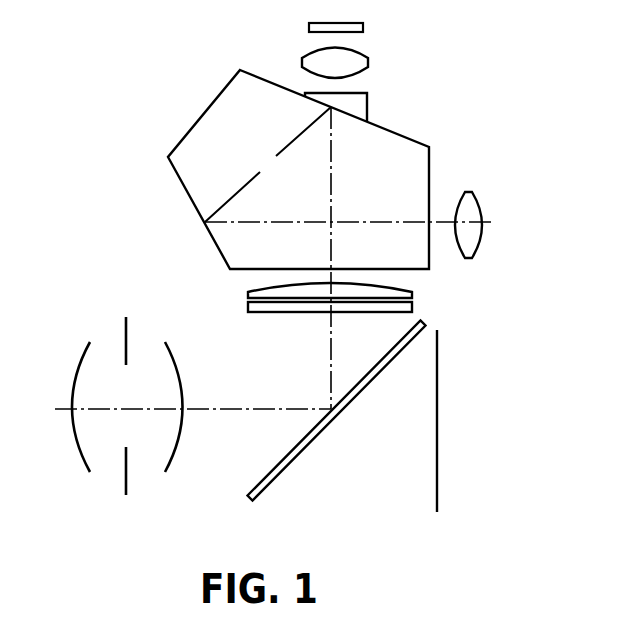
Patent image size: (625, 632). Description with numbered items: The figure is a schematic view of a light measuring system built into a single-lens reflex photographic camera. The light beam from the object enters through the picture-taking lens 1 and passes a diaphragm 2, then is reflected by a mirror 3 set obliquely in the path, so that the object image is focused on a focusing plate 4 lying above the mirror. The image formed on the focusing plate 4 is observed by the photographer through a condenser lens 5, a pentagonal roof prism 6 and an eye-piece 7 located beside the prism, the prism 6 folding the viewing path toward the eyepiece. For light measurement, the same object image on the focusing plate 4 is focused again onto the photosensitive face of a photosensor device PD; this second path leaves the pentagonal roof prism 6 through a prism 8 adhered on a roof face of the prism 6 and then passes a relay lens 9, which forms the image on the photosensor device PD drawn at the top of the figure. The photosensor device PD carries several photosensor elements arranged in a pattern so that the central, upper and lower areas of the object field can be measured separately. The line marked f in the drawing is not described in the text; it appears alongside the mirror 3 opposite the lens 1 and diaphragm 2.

The picture-taking lens 1 is at (82, 462).
The diaphragm 2 is at (123, 318).
The mirror 3 is at (265, 472).
The focusing plate 4 is at (390, 316).
The condenser lens 5 is at (410, 297).
The pentagonal roof prism 6 is at (198, 122).
The eye-piece 7 is at (472, 193).
The prism 8 is at (367, 97).
The relay lens 9 is at (368, 60).
The photosensor device PD is at (363, 23).
The film plane f is at (438, 483).